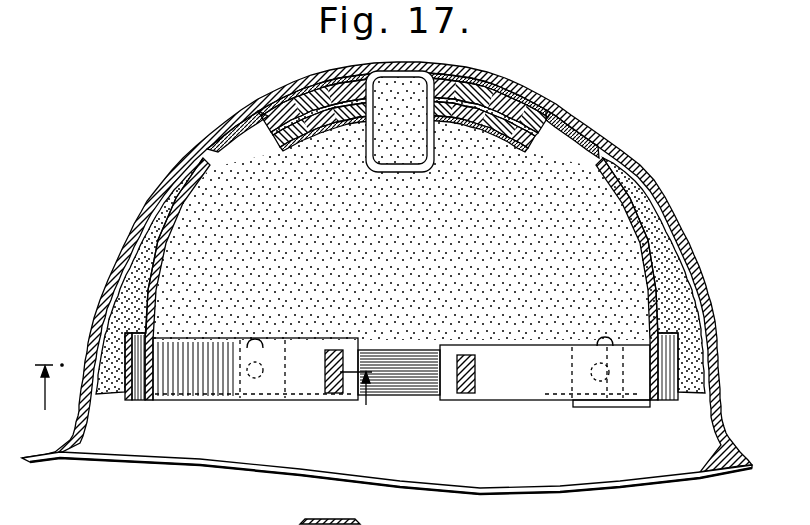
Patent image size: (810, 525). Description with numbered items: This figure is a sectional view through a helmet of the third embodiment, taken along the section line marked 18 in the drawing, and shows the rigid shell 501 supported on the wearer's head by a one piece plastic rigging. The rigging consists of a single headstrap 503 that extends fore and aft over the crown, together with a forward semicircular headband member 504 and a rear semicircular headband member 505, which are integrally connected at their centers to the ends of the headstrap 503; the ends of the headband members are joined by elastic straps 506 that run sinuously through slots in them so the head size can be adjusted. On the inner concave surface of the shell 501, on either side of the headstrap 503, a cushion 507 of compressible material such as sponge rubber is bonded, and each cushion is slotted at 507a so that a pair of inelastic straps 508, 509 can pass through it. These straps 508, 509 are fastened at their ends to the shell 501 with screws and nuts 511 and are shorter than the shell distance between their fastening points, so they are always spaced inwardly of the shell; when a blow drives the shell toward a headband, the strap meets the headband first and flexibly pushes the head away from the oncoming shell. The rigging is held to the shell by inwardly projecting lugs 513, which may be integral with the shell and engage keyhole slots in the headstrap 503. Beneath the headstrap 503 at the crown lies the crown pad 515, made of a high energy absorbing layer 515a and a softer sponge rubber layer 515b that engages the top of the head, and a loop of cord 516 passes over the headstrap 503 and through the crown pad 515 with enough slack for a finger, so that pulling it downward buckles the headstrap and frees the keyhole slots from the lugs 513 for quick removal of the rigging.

The rigid shell 501 is at (152, 207).
The headstrap 503 is at (628, 190).
The forward semicircular headband member 504 is at (203, 383).
The rear semicircular headband member 505 is at (523, 390).
The elastic straps 506 is at (410, 380).
The cushion 507 is at (108, 393).
The slot 507a is at (262, 338).
The inelastic strap 508 is at (138, 405).
The inelastic strap 509 is at (668, 350).
The nuts 511 is at (315, 514).
The lug 513 is at (211, 148).
The crown pad 515 is at (477, 89).
The layer of compressible material of high energy absorbing qualities 515a is at (510, 75).
The layer of softer compressible material 515b is at (522, 95).
The loop of cord 516 is at (465, 77).
The section line 18 is at (200, 399).